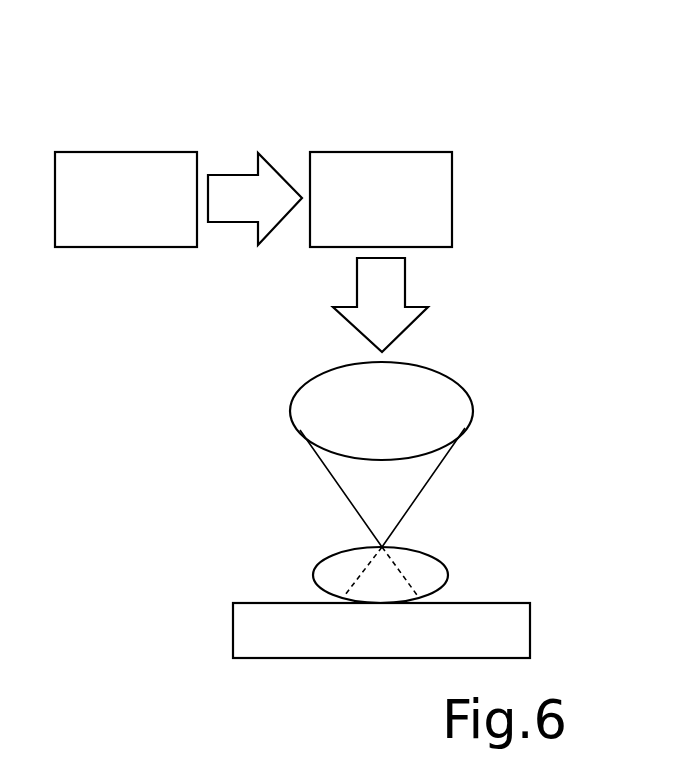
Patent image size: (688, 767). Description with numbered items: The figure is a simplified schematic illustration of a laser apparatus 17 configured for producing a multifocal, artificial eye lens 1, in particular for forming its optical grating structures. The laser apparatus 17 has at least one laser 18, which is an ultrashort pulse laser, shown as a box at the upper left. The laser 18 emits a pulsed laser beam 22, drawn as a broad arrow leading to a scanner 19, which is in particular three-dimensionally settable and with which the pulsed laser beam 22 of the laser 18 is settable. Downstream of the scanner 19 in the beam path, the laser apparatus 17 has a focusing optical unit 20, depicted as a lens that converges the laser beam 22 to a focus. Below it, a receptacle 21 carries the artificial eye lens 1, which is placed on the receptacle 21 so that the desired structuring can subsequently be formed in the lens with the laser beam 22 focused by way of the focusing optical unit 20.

The artificial eye lens 1 is at (447, 563).
The laser apparatus 17 is at (232, 133).
The laser 18 is at (122, 163).
The scanner 19 is at (375, 163).
The focusing optical unit 20 is at (445, 384).
The receptacle 21 is at (515, 623).
The laser beam 22 is at (238, 215).